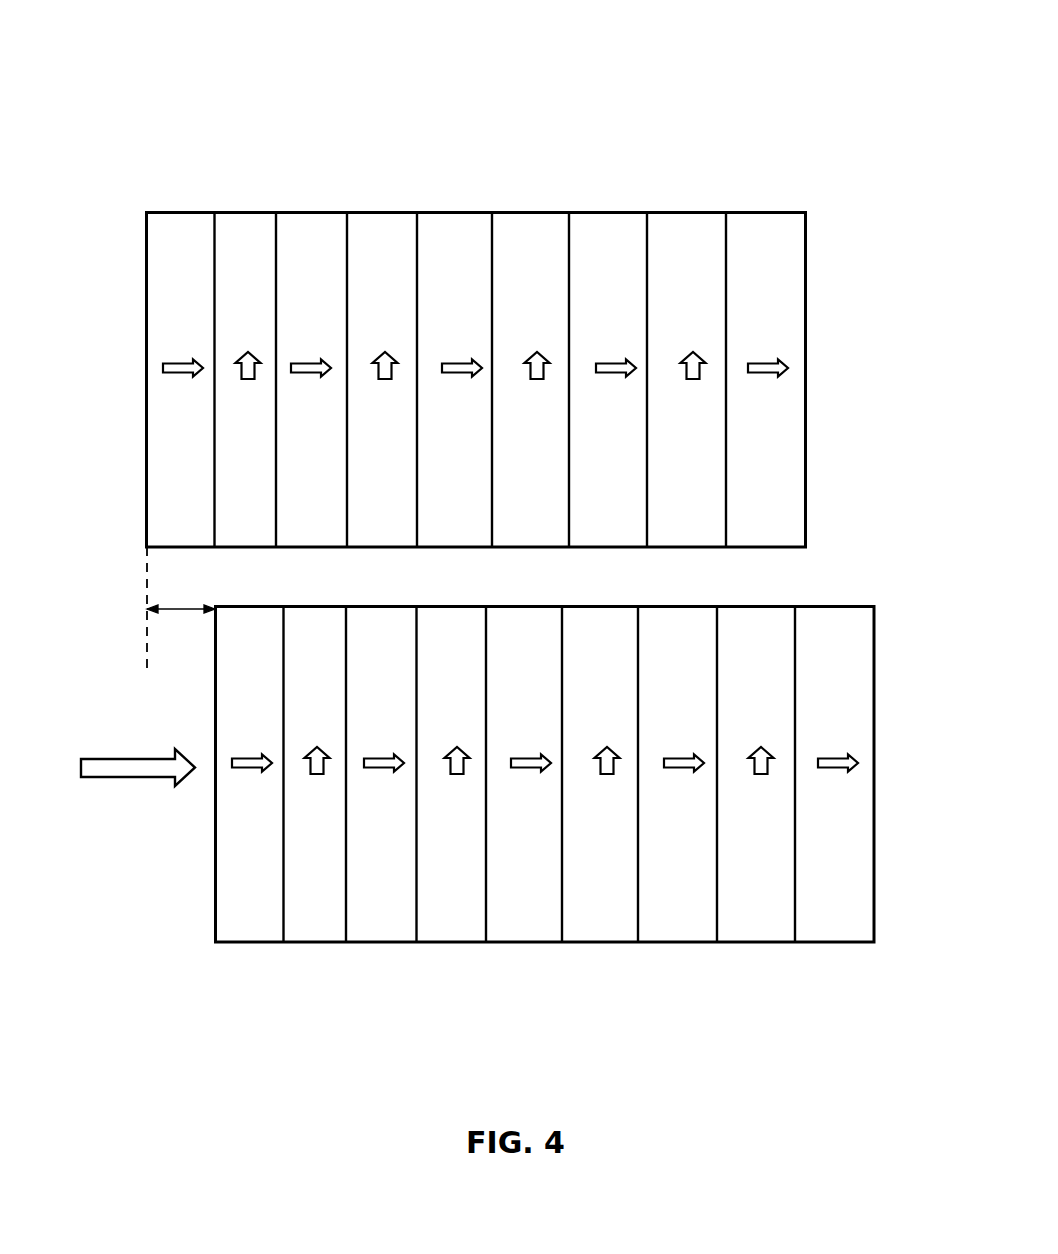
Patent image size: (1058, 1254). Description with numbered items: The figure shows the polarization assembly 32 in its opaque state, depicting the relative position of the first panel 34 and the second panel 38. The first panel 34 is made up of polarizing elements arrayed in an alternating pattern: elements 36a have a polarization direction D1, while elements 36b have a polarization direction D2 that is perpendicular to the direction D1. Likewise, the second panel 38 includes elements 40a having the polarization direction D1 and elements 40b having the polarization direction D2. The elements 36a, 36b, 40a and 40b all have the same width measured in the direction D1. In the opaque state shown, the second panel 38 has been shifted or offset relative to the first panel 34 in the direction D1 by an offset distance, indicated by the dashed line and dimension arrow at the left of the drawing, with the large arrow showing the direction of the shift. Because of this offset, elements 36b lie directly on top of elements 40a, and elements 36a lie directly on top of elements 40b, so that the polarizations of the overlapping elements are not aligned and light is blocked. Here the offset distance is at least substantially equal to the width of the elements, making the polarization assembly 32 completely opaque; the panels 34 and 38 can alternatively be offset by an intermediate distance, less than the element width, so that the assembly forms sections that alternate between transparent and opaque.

The polarization assembly 32 is at (857, 46).
The first panel 34 is at (146, 303).
The elements having polarization direction D1 36a is at (197, 247).
The elements having polarization direction D2 36b is at (553, 247).
The second panel 38 is at (215, 840).
The elements having polarization direction D1 40a is at (268, 928).
The elements having polarization direction D2 40b is at (620, 928).
The polarization direction D1 is at (760, 362).
The polarization direction D2 is at (685, 368).